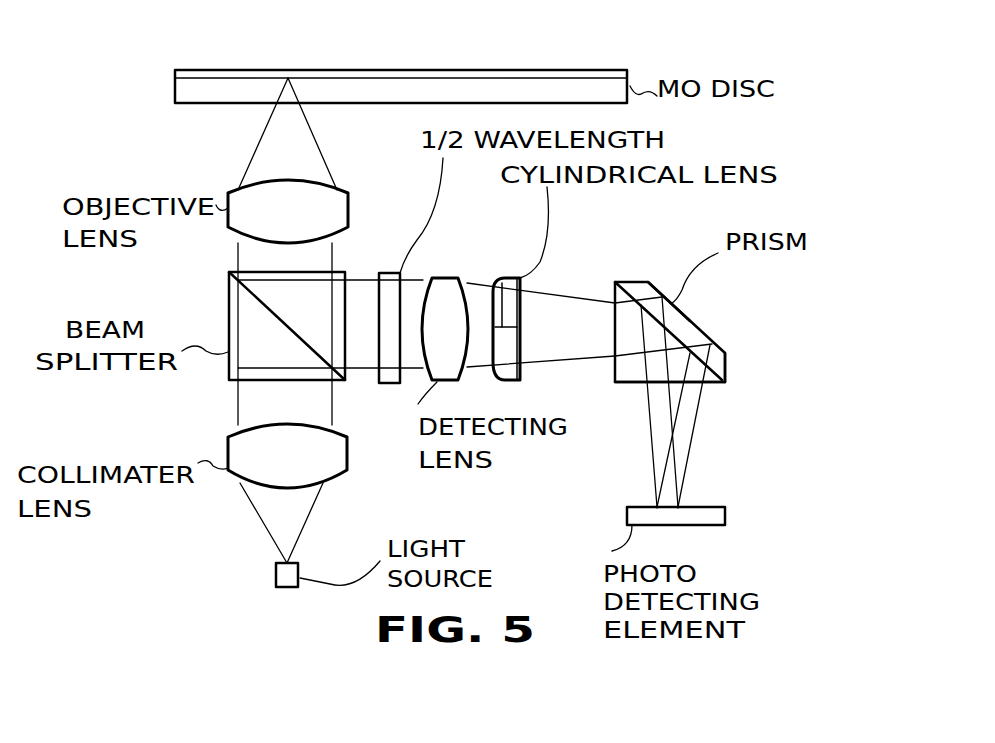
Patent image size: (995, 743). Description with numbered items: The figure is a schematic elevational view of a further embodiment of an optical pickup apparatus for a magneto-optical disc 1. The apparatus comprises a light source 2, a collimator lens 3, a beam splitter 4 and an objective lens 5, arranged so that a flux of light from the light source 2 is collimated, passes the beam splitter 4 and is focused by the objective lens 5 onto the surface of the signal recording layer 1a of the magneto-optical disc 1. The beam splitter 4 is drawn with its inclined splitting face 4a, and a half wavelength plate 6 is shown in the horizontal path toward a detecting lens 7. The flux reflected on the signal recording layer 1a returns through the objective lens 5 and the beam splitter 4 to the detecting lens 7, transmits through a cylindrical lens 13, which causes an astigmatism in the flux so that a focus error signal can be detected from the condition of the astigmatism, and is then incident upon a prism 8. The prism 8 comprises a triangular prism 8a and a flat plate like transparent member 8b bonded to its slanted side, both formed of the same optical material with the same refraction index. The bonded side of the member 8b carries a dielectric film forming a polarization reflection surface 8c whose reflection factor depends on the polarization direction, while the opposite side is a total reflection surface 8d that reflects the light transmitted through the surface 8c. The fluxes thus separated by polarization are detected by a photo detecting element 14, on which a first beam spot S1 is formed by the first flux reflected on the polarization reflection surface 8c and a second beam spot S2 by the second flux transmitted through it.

The magneto-optical disc 1 is at (603, 50).
The signal recording layer 1a is at (513, 70).
The light source 2 is at (299, 568).
The collimator lens 3 is at (347, 470).
The beam splitter 4 is at (348, 271).
The splitting surface of beam splitter 4a is at (320, 362).
The objective lens 5 is at (338, 199).
The half wavelength plate 6 is at (392, 277).
The detecting lens 7 is at (447, 292).
The prism 8 is at (661, 285).
The triangular prism 8a is at (635, 373).
The flat plate like transparent member 8b is at (690, 336).
The polarization reflection surface 8c is at (712, 384).
The total reflection surface 8d is at (726, 357).
The cylindrical lens 13 is at (511, 278).
The photo detecting element 14 is at (718, 517).
The first beam spot S1 is at (655, 505).
The second beam spot S2 is at (680, 505).